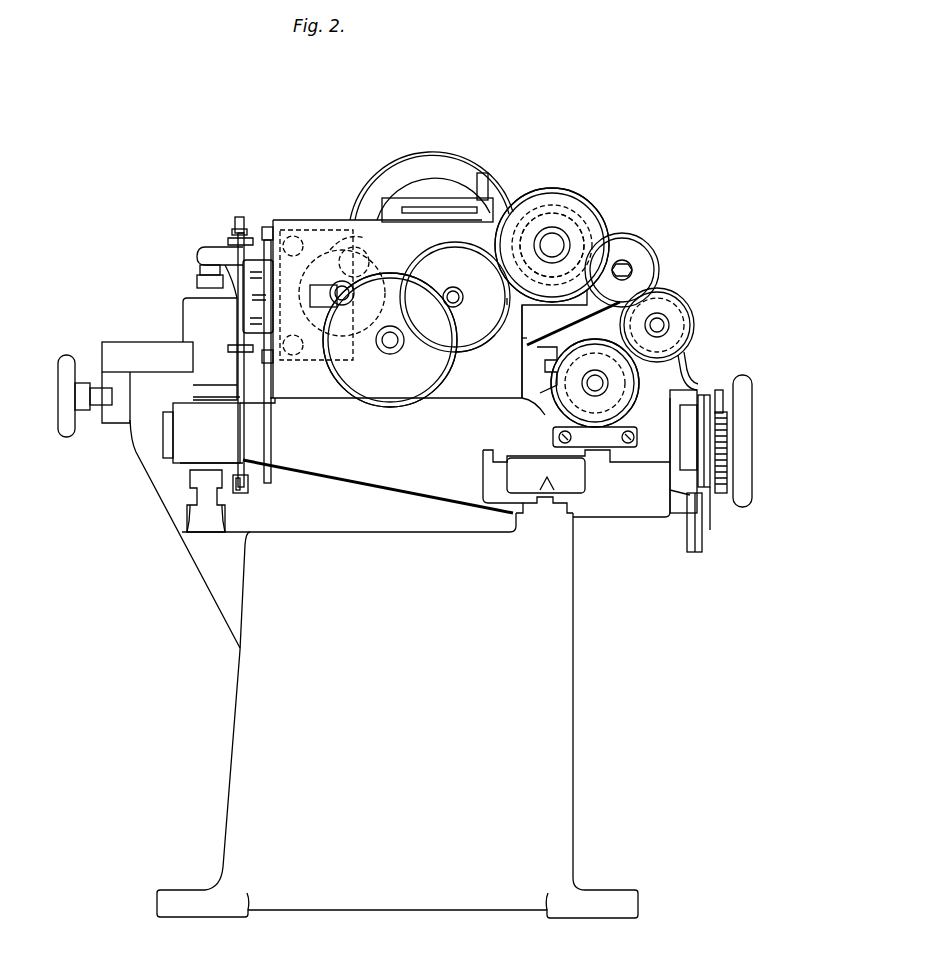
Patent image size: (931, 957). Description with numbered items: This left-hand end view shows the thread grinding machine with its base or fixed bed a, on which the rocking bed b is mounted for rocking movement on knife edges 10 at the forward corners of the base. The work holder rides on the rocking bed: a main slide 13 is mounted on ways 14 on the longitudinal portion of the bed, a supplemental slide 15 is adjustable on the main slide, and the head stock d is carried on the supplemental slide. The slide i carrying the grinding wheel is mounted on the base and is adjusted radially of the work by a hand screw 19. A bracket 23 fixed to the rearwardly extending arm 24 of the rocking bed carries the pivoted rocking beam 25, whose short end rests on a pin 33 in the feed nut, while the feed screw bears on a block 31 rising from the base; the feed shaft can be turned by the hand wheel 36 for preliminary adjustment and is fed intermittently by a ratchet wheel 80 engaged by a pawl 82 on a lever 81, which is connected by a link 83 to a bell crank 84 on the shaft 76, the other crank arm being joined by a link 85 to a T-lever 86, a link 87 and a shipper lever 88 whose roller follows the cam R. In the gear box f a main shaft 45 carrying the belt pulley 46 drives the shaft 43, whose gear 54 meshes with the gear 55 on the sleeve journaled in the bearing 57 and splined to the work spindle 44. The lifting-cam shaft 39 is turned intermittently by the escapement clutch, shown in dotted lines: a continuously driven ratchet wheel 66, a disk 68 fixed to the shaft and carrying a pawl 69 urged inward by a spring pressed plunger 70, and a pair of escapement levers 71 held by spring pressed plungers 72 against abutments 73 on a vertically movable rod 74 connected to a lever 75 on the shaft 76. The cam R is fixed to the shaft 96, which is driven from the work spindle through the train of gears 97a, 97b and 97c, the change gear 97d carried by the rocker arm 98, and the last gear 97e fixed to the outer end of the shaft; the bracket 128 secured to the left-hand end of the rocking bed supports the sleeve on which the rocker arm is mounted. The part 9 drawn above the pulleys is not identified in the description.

The arcuate guard 9 is at (465, 178).
The knife edges 10 is at (555, 507).
The main slide 13 is at (540, 376).
The ways 14 is at (530, 392).
The supplemental slide 15 is at (540, 343).
The hand screw 19 is at (112, 408).
The bracket 23 is at (190, 330).
The rearwardly extending arm 24 is at (298, 470).
The rocking beam 25 is at (200, 257).
The block 31 is at (195, 497).
The pin 33 is at (198, 275).
The hand wheel 36 is at (752, 428).
The shaft 39 is at (352, 293).
The shaft 43 is at (453, 287).
The work spindle 44 is at (553, 243).
The main shaft 45 is at (389, 350).
The pulley 46 is at (390, 340).
The gear 54 is at (462, 380).
The gear 55 is at (538, 195).
The bearing 57 is at (572, 225).
The ratchet wheel 66 is at (390, 340).
The disk 68 is at (372, 266).
The pawl 69 is at (352, 272).
The spring pressed plunger 70 is at (318, 232).
The escapement levers 71 is at (237, 245).
The spring pressed plungers 72 is at (243, 262).
The abutments 73 is at (235, 240).
The rod 74 is at (240, 217).
The lever 75 is at (238, 498).
The shaft 76 is at (333, 487).
The ratchet wheel 80 is at (722, 495).
The lever 81 is at (706, 398).
The pawl 82 is at (722, 400).
The link 83 is at (703, 545).
The bell crank 84 is at (690, 515).
The link 85 is at (683, 497).
The T-lever 86 is at (700, 378).
The link 87 is at (693, 366).
The shipper lever 88 is at (705, 333).
The shaft 96 is at (602, 386).
The gear 97a is at (592, 232).
The gear 97b is at (645, 255).
The pulley hub 97c is at (648, 270).
The change gear 97d is at (672, 308).
The gear 97e is at (560, 410).
The rocker arm 98 is at (700, 306).
The bracket 128 is at (578, 438).
The base a is at (384, 669).
The rocking bed b is at (383, 376).
The head stock d is at (505, 295).
The gear box f is at (495, 351).
The slide i is at (147, 382).
The cam R is at (617, 443).